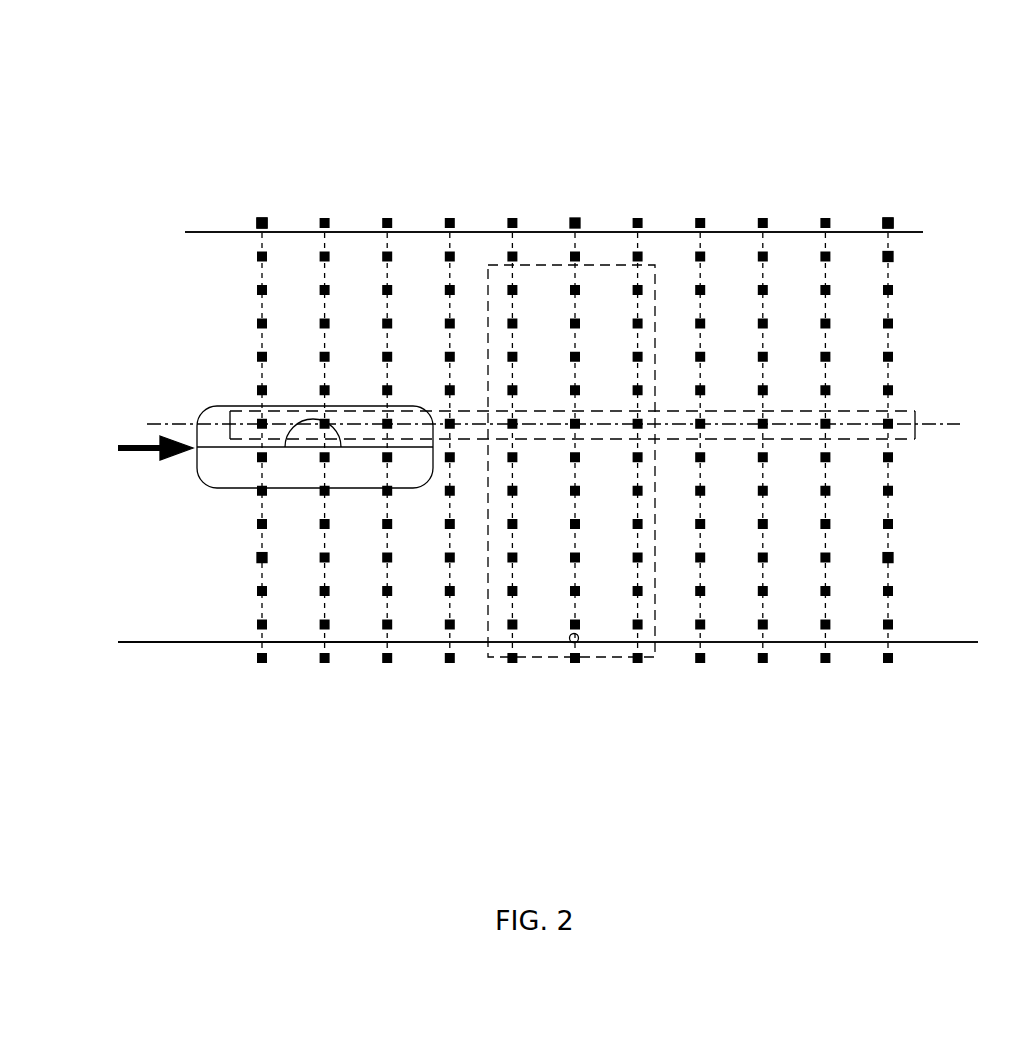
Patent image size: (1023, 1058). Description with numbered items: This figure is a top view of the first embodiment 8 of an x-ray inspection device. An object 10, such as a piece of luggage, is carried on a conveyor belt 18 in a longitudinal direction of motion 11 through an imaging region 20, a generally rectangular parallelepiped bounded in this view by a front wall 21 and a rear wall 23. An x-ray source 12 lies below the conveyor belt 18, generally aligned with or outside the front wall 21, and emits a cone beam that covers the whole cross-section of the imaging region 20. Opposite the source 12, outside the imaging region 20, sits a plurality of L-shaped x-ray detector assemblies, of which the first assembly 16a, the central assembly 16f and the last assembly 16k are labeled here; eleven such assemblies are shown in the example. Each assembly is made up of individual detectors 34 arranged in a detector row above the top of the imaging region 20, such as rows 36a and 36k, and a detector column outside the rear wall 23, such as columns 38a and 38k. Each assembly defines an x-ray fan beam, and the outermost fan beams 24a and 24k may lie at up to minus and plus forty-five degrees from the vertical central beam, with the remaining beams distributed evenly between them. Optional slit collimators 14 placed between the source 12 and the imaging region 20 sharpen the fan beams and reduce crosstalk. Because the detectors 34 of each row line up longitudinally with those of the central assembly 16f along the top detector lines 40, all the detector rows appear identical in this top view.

The first embodiment 8 is at (136, 112).
The object 10 is at (207, 478).
The direction of motion 11 is at (140, 441).
The x-ray source 12 is at (580, 646).
The slit collimators 14 is at (655, 657).
The x-ray detector assembly 16a is at (254, 216).
The central detector assembly 16f is at (572, 216).
The x-ray detector assembly 16k is at (896, 218).
The conveyor belt 18 is at (236, 627).
The imaging region 20 is at (930, 316).
The front wall 21 is at (368, 645).
The rear wall 23 is at (731, 231).
The fan beam 24a is at (256, 313).
The fan beam 24k is at (888, 478).
The detectors 34 is at (893, 256).
The detector row 36a is at (257, 560).
The detector row 36k is at (895, 563).
The detector column 38a is at (264, 214).
The detector column 38k is at (888, 216).
The top detector lines 40 is at (930, 427).